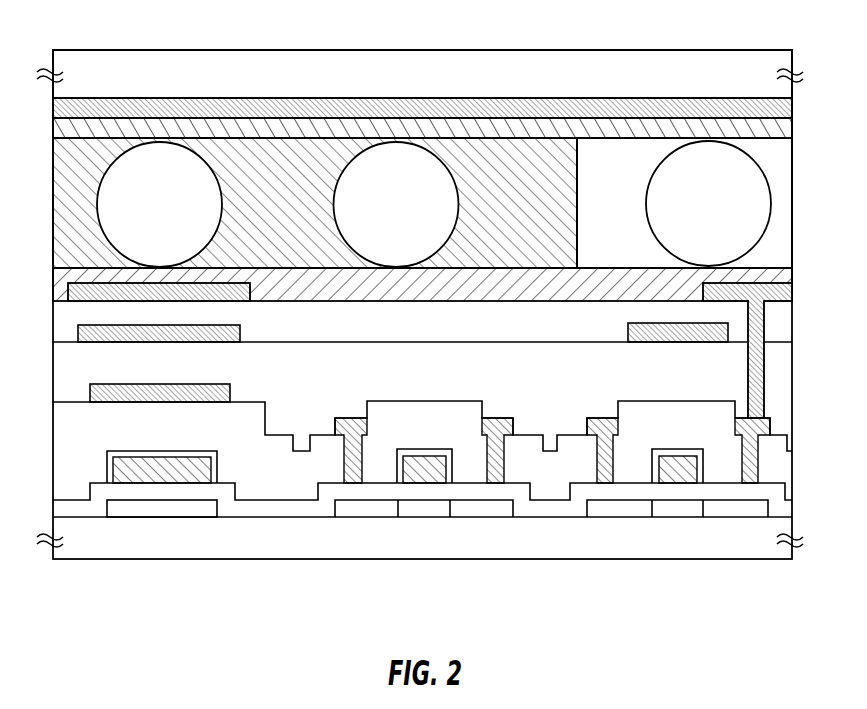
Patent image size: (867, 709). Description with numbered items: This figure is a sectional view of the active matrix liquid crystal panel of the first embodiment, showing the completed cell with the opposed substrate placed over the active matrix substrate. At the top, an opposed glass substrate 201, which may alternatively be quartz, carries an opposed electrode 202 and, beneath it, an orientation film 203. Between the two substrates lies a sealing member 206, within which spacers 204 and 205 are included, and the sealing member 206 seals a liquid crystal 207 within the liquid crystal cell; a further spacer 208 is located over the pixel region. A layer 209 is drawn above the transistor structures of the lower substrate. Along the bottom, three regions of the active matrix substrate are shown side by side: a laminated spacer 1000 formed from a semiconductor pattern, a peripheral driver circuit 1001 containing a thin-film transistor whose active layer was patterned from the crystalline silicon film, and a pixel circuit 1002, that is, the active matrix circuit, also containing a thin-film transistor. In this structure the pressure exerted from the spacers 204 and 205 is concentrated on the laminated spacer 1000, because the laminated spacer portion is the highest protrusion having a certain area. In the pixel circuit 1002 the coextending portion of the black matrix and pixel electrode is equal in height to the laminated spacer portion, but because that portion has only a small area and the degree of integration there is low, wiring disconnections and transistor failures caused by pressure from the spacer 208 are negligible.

The opposed glass substrate 201 is at (141, 92).
The opposed electrode 202 is at (175, 107).
The orientation film 203 is at (332, 125).
The spacer 204 is at (194, 246).
The spacer 205 is at (429, 246).
The sealing member 206 is at (566, 186).
The liquid crystal 207 is at (635, 184).
The spacer 208 is at (744, 246).
The planarizing layer 209 is at (440, 285).
The laminated spacer 1000 is at (162, 530).
The peripheral driver circuit 1001 is at (424, 513).
The pixel circuit 1002 is at (678, 513).